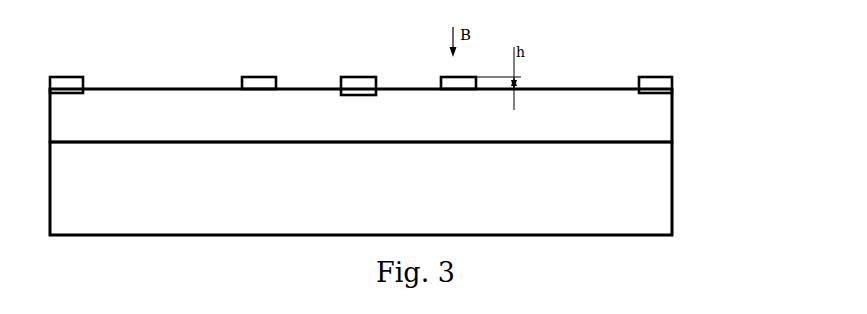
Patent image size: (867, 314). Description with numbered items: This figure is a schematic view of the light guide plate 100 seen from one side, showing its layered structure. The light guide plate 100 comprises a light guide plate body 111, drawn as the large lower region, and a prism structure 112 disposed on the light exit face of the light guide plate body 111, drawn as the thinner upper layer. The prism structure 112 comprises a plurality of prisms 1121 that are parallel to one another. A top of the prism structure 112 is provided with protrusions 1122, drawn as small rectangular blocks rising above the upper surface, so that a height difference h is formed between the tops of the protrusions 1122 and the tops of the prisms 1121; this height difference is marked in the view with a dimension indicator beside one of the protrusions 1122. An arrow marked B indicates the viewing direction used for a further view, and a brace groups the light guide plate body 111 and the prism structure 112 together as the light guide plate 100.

The light guide plate 100 is at (727, 97).
The light guide plate body 111 is at (663, 188).
The prism structure 112 is at (675, 101).
The prisms 1121 is at (362, 128).
The protrusions 1122 is at (360, 87).